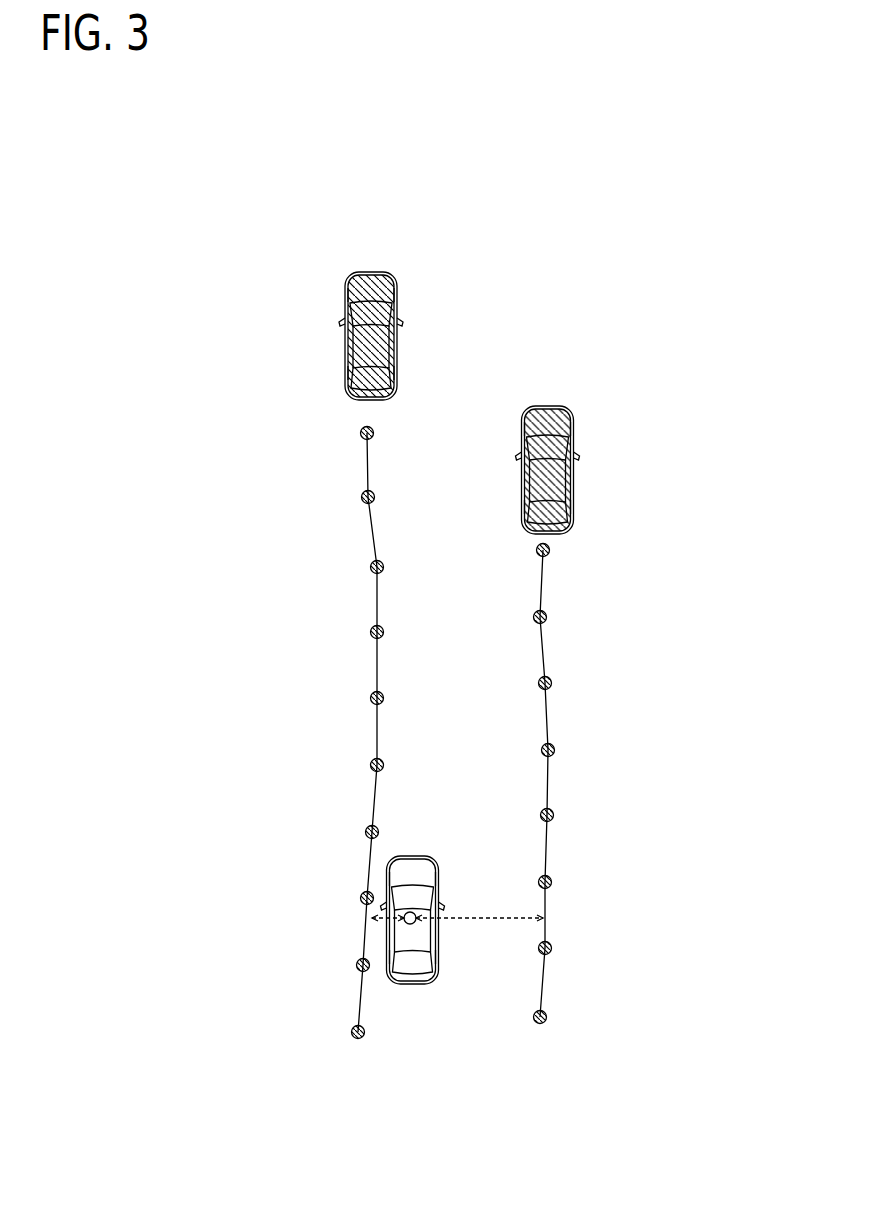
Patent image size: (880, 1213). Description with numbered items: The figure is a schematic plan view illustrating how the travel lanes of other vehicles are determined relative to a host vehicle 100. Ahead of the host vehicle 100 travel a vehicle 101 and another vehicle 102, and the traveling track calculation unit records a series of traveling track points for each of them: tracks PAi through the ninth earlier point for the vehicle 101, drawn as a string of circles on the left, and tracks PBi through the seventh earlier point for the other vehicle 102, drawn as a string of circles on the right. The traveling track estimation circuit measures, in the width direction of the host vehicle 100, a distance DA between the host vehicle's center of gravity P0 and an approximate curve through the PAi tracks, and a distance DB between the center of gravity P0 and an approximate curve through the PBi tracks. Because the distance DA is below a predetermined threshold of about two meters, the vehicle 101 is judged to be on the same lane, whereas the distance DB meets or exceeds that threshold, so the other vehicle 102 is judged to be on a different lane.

The host vehicle 100 is at (437, 938).
The vehicle 101 is at (363, 271).
The other vehicle 102 is at (553, 406).
The center of gravity P0 is at (411, 925).
The distance DA is at (390, 910).
The distance DB is at (479, 907).
The traveling track PAi is at (361, 434).
The traveling track PBi is at (549, 553).